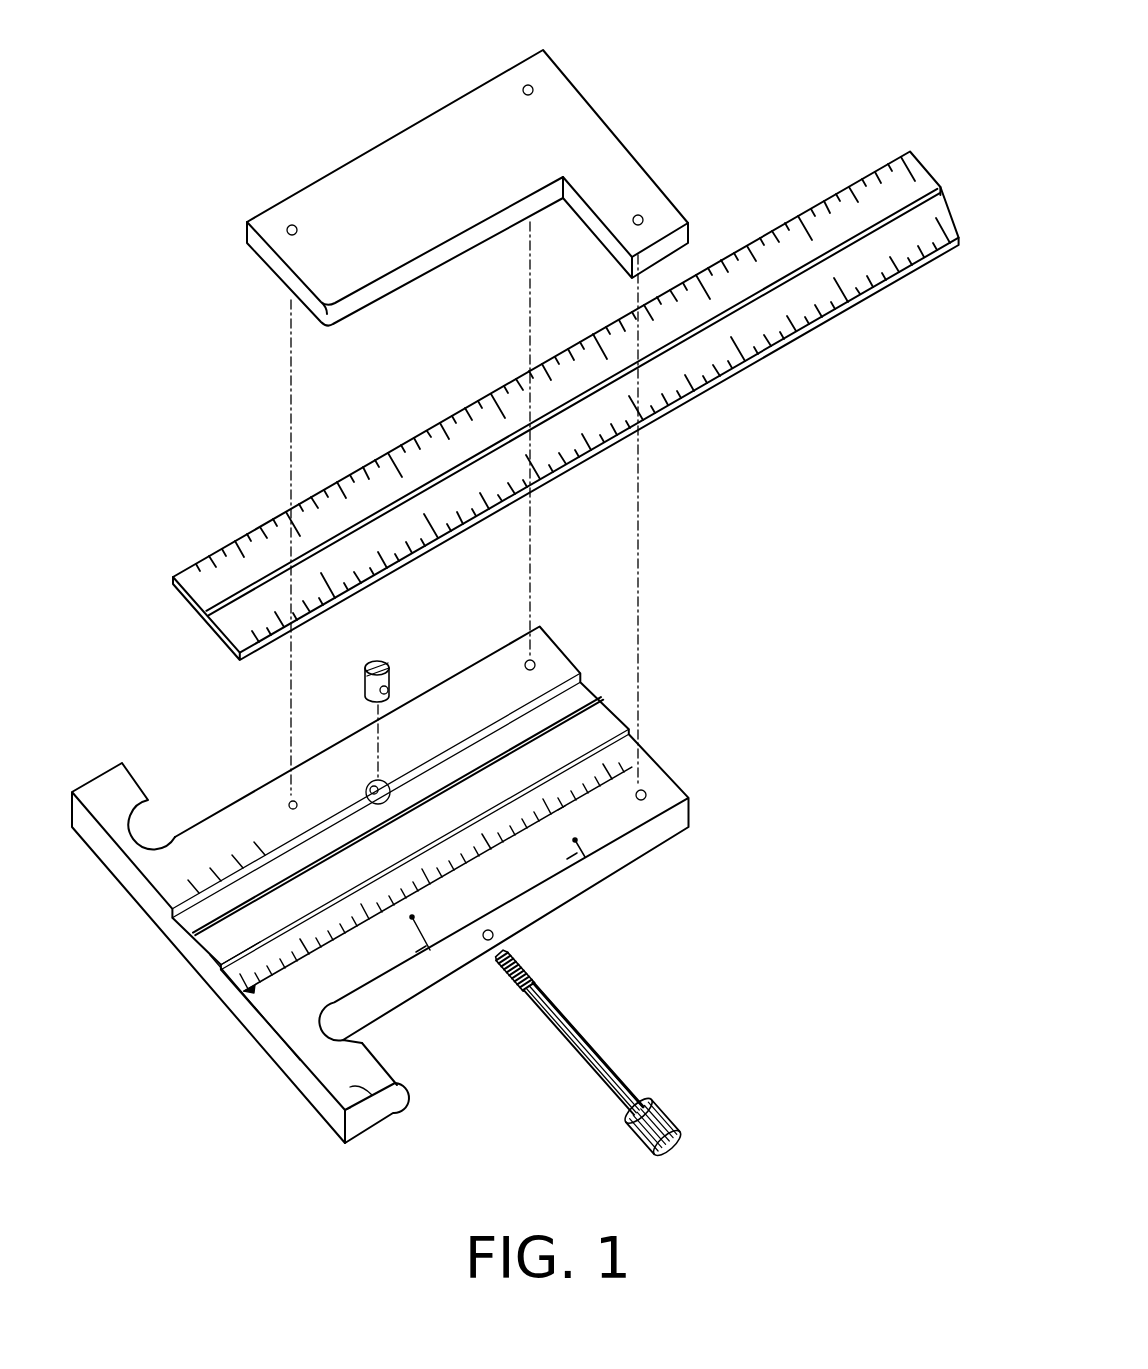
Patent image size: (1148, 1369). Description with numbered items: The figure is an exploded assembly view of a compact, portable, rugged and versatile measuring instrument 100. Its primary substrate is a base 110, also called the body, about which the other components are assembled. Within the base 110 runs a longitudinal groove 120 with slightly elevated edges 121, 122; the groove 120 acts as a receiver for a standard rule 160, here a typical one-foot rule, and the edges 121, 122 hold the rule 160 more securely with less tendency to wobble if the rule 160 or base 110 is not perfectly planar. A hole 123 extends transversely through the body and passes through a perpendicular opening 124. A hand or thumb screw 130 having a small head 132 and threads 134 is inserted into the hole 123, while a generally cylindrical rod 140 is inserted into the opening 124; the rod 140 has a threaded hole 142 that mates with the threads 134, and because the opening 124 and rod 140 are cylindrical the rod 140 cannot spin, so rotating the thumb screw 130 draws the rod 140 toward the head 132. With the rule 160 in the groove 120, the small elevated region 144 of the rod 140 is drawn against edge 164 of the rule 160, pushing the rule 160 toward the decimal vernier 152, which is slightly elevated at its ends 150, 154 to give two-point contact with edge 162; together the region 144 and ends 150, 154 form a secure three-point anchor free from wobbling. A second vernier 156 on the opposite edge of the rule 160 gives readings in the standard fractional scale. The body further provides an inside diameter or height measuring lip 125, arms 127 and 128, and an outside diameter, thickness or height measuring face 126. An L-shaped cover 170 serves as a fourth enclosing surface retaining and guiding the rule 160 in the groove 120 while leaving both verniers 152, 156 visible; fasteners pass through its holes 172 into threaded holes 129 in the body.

The instrument 100 is at (792, 24).
The base 110 is at (617, 592).
The longitudinal groove 120 is at (600, 714).
The elevated edge 121 is at (640, 743).
The elevated edge 122 is at (582, 690).
The hole 123 is at (500, 932).
The perpendicular opening 124 is at (390, 786).
The inside diameter or height measuring lip 125 is at (398, 1090).
The outside diameter or thickness or height measuring face 126 is at (300, 1068).
The arm 127 is at (352, 1087).
The arm 128 is at (112, 790).
The threaded hole 129 is at (292, 800).
The thumb screw 130 is at (588, 1037).
The head 132 is at (663, 1117).
The threads 134 is at (534, 973).
The cylindrical rod 140 is at (392, 683).
The threaded hole 142 is at (380, 700).
The elevated region 144 is at (375, 661).
The end 150 is at (243, 992).
The vernier 152 is at (222, 968).
The end 154 is at (560, 815).
The vernier 156 is at (195, 905).
The rule 160 is at (868, 208).
The edge 162 is at (860, 292).
The edge 164 is at (772, 230).
The cover 170 is at (395, 178).
The holes 172 is at (290, 228).